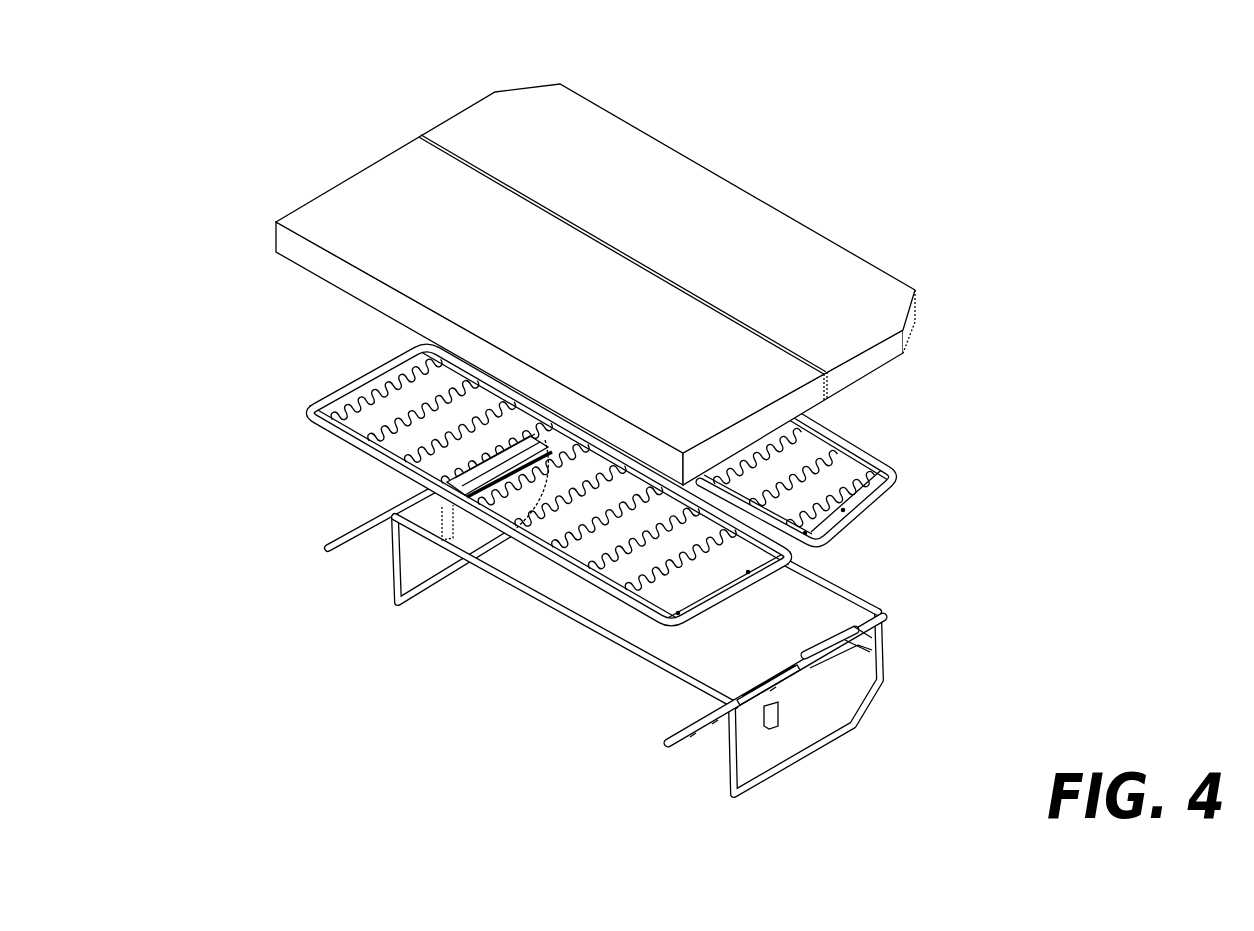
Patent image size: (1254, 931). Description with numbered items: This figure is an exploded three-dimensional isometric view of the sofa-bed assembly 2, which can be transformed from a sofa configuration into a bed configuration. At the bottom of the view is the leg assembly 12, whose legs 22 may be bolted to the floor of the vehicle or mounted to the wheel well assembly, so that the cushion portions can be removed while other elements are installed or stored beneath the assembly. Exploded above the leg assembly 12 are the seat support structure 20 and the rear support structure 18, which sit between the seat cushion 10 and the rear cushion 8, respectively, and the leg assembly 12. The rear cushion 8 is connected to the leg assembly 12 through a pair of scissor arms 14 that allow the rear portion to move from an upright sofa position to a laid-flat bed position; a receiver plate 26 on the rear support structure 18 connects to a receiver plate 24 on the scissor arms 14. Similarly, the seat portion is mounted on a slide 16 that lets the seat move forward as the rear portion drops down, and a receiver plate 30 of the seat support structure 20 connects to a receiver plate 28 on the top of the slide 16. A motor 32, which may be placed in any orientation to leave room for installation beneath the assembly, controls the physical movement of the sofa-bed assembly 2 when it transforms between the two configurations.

The sofa-bed assembly 2 is at (200, 112).
The rear cushion 8 is at (458, 104).
The seat cushion 10 is at (322, 192).
The leg assembly 12 is at (532, 660).
The scissor arms 14 is at (870, 655).
The slide 16 is at (690, 745).
The rear support structure 18 is at (905, 496).
The seat support structure 20 is at (302, 414).
The legs 22 is at (392, 556).
The receiver plate 24 is at (840, 628).
The receiver plate 26 is at (856, 514).
The receiver plate 28 is at (740, 690).
The receiver plate 30 is at (713, 601).
The motor 32 is at (780, 722).